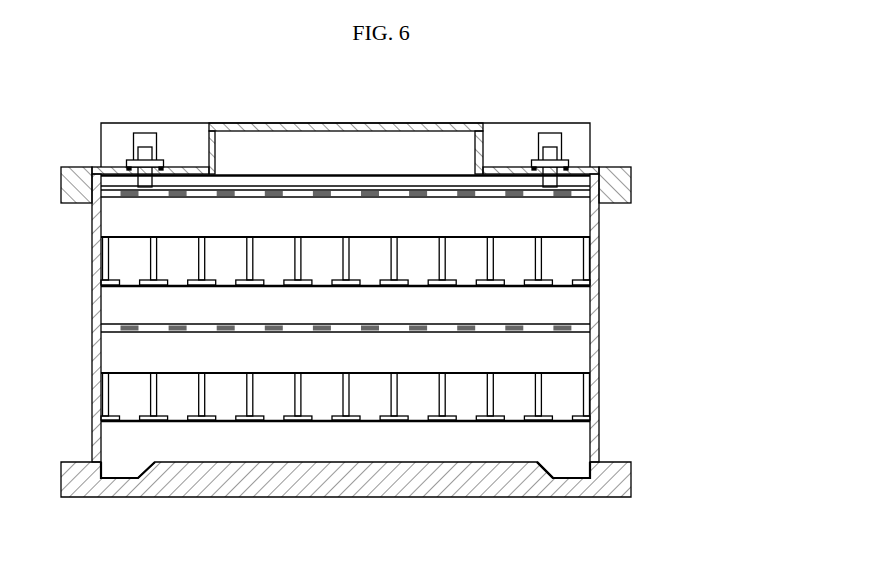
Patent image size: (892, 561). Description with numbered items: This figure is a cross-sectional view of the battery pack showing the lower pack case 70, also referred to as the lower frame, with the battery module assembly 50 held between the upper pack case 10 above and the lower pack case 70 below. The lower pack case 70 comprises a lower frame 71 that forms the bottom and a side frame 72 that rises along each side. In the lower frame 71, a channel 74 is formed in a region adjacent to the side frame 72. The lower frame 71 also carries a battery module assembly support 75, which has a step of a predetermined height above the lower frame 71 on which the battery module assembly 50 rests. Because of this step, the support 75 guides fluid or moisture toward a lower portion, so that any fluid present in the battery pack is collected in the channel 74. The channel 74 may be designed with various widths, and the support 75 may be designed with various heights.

The upper pack case 10 is at (510, 123).
The battery module assembly 50 is at (580, 300).
The lower pack case 70 is at (381, 357).
The lower frame 71 is at (140, 497).
The side frame 72 is at (599, 268).
The channel 74 is at (590, 500).
The battery module assembly support 75 is at (555, 463).